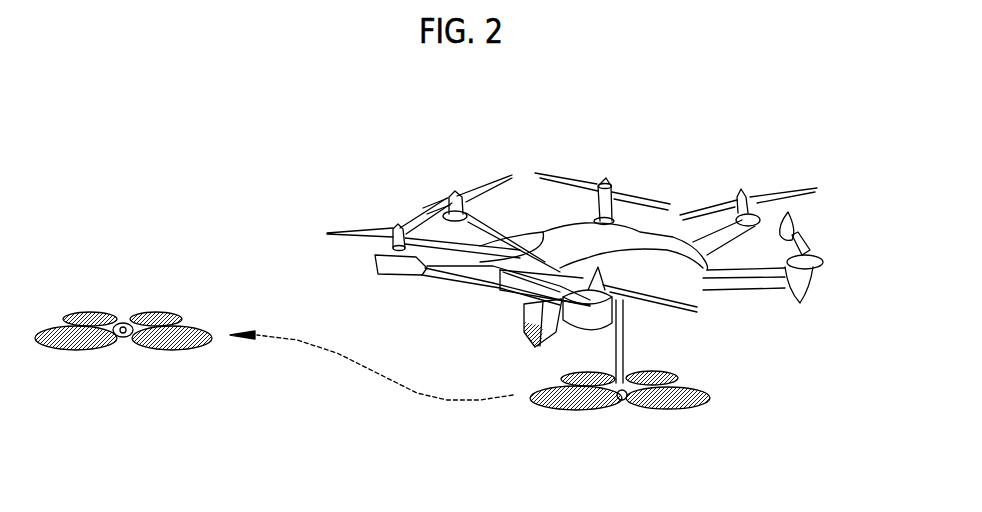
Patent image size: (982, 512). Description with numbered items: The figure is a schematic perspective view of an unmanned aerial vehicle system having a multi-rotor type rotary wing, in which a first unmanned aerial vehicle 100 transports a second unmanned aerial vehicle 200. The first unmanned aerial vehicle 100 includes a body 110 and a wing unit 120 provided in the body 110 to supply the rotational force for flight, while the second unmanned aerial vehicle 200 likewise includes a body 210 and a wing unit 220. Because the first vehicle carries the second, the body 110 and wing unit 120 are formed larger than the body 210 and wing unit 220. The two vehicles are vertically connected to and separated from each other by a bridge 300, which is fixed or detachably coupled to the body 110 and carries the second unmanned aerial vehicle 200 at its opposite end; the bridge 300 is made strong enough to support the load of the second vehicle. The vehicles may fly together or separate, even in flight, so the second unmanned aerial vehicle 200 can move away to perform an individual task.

The first unmanned aerial vehicle 100 is at (716, 148).
The body 110 is at (678, 268).
The wing unit 120 is at (822, 239).
The second unmanned aerial vehicle 200 is at (730, 409).
The body 210 is at (622, 406).
The wing unit 220 is at (686, 375).
The bridge 300 is at (625, 338).